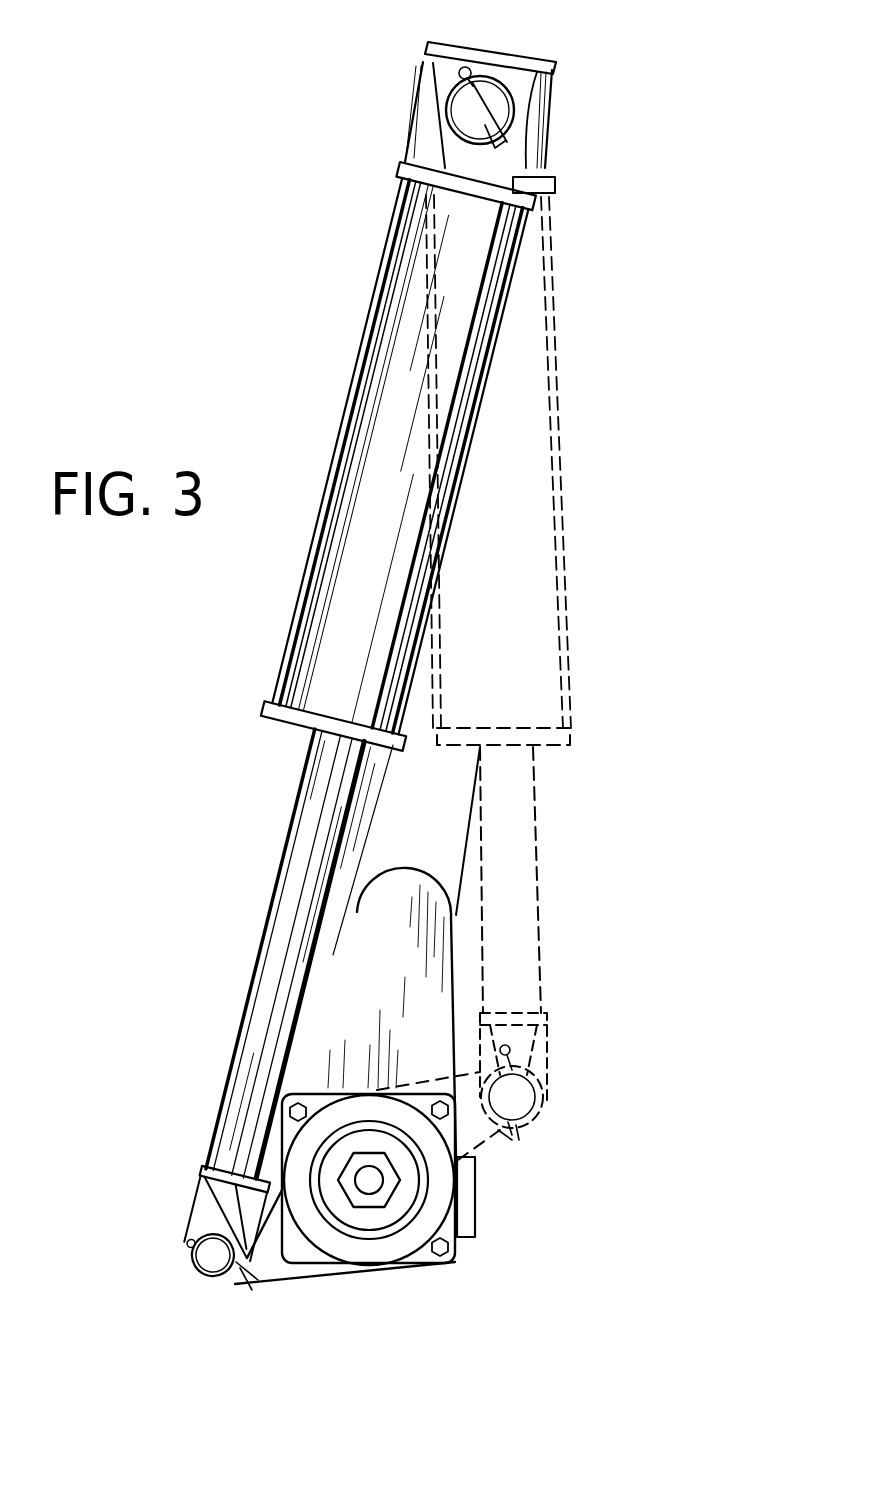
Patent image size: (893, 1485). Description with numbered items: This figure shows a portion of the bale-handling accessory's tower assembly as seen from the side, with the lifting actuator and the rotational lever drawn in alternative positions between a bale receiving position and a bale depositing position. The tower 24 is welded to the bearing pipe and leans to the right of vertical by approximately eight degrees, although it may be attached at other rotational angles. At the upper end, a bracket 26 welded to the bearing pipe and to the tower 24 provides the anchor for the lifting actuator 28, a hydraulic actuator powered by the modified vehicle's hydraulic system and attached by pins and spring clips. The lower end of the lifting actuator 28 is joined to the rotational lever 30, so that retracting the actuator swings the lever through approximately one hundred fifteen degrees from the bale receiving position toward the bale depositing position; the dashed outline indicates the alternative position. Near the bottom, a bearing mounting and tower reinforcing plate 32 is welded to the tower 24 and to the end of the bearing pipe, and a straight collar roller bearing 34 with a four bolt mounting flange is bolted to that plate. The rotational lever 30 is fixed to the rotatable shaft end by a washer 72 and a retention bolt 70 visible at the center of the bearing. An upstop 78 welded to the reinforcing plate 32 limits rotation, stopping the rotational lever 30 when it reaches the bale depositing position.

The tower 24 is at (437, 838).
The bracket 26 is at (507, 50).
The lifting actuator 28 is at (342, 406).
The rotational lever 30 is at (280, 1265).
The bearing mounting and tower reinforcing plate 32 is at (353, 982).
The straight collar roller bearing 34 is at (453, 1267).
The retention bolt 70 is at (367, 1205).
The washer 72 is at (397, 1213).
The upstop 78 is at (470, 1198).